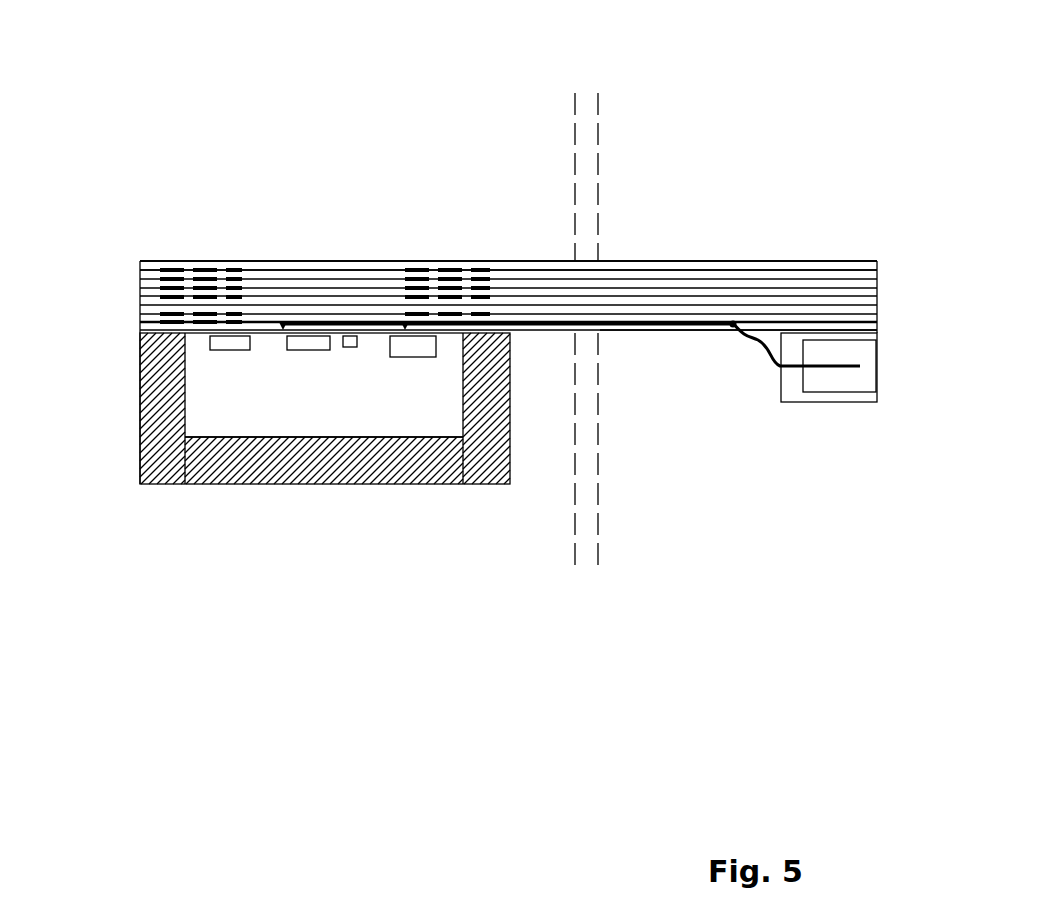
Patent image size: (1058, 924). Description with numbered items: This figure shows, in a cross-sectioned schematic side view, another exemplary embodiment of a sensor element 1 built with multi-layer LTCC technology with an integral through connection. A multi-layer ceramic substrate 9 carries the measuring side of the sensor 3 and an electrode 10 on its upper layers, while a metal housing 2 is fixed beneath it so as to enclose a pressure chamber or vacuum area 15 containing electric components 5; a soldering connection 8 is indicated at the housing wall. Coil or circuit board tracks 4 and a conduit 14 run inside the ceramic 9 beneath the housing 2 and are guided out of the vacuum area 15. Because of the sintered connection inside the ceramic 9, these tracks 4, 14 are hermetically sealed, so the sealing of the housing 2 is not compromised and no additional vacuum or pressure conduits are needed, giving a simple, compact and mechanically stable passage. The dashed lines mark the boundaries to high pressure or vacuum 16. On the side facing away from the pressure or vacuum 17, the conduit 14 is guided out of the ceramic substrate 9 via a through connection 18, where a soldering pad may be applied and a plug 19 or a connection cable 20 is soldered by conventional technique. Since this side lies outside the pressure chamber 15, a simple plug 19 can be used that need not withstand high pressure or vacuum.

The sensor element 1 is at (471, 136).
The metal housing 2 is at (312, 486).
The measuring side of the sensor 3 is at (280, 221).
The coil/circuit board track 4 is at (153, 295).
The electric components 5 is at (409, 376).
The soldering connection 8 is at (135, 338).
The ceramic substrate 9 is at (187, 254).
The electrode 10 is at (309, 265).
The conduit (for passage) 14 is at (631, 326).
The pressure chamber, vacuum area 15 is at (374, 544).
The boundaries to high pressure, vacuum 16 is at (605, 490).
The side facing away from the pressure/vacuum 17 is at (768, 514).
The through connection, soldering pad 18 is at (739, 343).
The plug 19 is at (828, 404).
The connection cable 20 is at (856, 367).